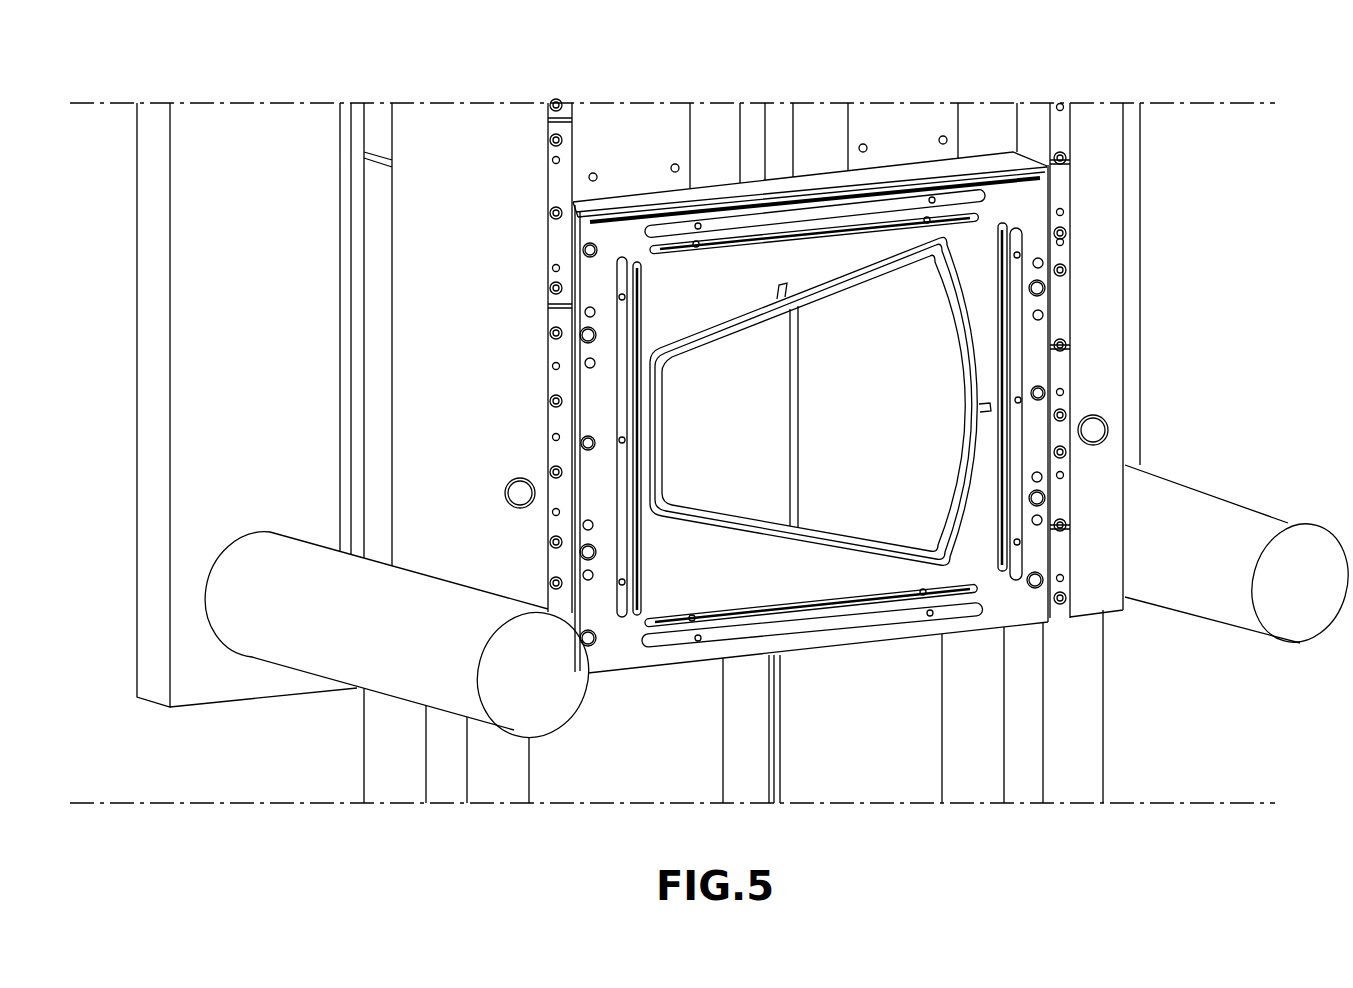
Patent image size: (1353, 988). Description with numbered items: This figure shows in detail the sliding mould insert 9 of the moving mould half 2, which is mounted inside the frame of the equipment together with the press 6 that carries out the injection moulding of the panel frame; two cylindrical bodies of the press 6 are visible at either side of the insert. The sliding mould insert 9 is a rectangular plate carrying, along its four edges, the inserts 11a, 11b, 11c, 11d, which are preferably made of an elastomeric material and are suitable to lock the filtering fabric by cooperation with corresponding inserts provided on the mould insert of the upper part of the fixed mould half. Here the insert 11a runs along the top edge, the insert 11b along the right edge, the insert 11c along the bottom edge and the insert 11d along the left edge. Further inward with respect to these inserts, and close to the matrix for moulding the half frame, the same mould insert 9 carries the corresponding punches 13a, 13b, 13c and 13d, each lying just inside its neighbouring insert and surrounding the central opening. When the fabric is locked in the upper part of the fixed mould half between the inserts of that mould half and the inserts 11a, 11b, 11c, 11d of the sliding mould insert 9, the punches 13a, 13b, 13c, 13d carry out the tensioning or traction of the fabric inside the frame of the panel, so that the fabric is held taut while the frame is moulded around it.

The moving mould half 2 is at (440, 341).
The press 6 is at (350, 640).
The sliding mould insert 9 is at (1013, 197).
The insert 11a is at (840, 202).
The insert 11b is at (1025, 363).
The insert 11c is at (847, 628).
The insert 11d is at (620, 407).
The punch 13a is at (750, 240).
The punch 13b is at (1000, 427).
The punch 13c is at (773, 607).
The punch 13d is at (635, 512).